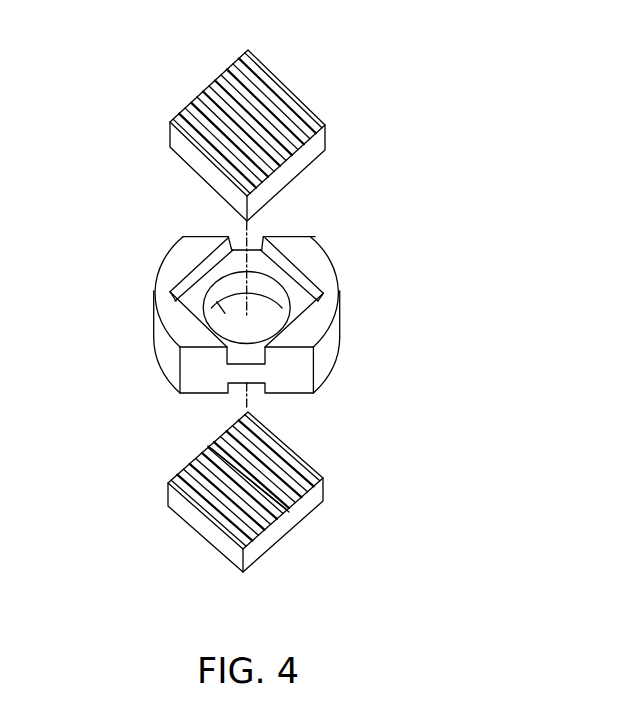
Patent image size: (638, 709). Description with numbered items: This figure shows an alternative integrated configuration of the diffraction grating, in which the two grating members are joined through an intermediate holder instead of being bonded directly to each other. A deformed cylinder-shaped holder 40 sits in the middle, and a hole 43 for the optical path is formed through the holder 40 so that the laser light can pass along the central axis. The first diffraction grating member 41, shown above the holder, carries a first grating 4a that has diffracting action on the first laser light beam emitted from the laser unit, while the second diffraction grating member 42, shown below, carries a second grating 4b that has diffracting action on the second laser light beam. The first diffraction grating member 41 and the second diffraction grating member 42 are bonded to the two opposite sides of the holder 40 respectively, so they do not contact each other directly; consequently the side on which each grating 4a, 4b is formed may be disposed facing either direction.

The deformed cylinder-shaped holder 40 is at (343, 340).
The first diffraction grating member 41 is at (303, 160).
The second diffraction grating member 42 is at (283, 527).
The hole 43 is at (170, 293).
The first grating 4a is at (265, 68).
The second grating 4b is at (289, 470).